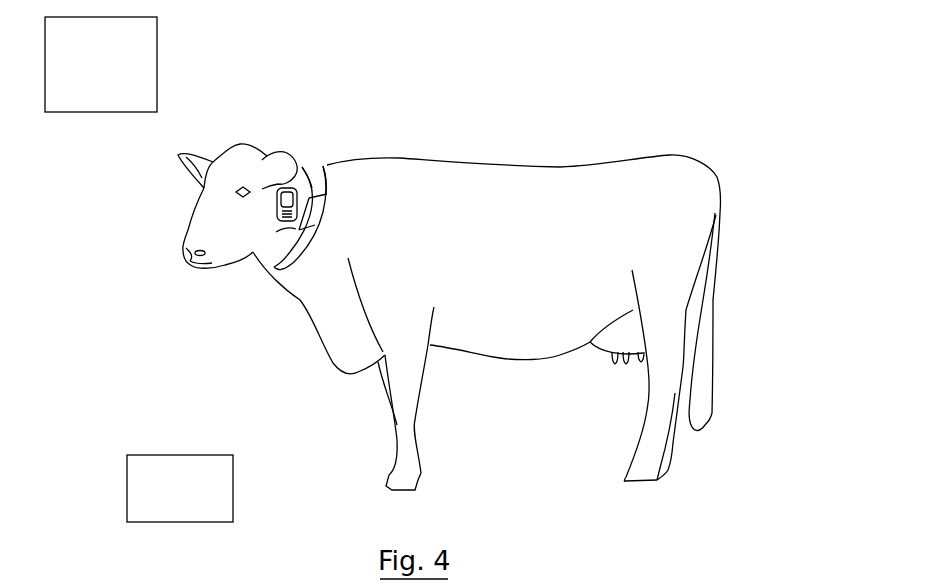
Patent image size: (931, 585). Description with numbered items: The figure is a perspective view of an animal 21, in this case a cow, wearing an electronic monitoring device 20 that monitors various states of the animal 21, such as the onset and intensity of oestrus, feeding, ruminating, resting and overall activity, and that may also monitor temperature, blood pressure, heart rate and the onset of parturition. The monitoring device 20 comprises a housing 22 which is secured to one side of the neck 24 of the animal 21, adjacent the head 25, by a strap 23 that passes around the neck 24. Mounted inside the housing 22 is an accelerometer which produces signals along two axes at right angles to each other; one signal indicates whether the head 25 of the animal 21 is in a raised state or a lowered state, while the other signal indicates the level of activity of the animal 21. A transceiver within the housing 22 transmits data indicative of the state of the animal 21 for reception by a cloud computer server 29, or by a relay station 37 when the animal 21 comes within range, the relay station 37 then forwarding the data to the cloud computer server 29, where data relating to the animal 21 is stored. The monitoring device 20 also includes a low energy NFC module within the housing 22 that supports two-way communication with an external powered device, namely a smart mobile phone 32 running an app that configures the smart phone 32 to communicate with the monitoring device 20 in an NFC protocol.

The cloud computer server 29 is at (148, 48).
The relay station 37 is at (163, 457).
The animal 21 is at (467, 183).
The head 25 is at (220, 212).
The electronic monitoring device 20 is at (323, 213).
The housing 22 is at (315, 221).
The strap 23 is at (320, 187).
The neck 24 is at (305, 180).
The smart mobile phone 32 is at (277, 230).